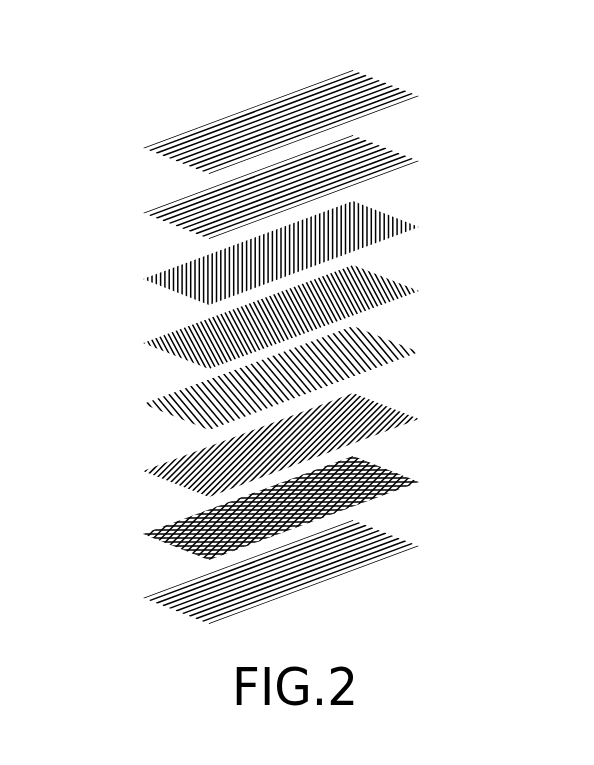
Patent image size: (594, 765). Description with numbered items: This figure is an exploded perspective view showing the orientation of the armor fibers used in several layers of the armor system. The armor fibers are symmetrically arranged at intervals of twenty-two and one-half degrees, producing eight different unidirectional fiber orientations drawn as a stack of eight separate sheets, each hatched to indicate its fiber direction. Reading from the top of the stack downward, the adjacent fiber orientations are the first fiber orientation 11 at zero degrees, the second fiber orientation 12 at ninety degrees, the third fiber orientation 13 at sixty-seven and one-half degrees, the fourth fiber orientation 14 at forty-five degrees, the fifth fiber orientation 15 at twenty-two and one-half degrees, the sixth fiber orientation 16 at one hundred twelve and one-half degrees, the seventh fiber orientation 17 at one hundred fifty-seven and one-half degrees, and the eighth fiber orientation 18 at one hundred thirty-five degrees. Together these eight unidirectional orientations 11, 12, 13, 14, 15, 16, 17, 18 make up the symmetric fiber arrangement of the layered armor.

The unidirectional fiber orientation 11 is at (427, 92).
The unidirectional fiber orientation 12 is at (130, 212).
The unidirectional fiber orientation 13 is at (427, 225).
The unidirectional fiber orientation 14 is at (130, 342).
The unidirectional fiber orientation 15 is at (427, 353).
The unidirectional fiber orientation 16 is at (130, 469).
The unidirectional fiber orientation 17 is at (427, 482).
The unidirectional fiber orientation 18 is at (130, 597).